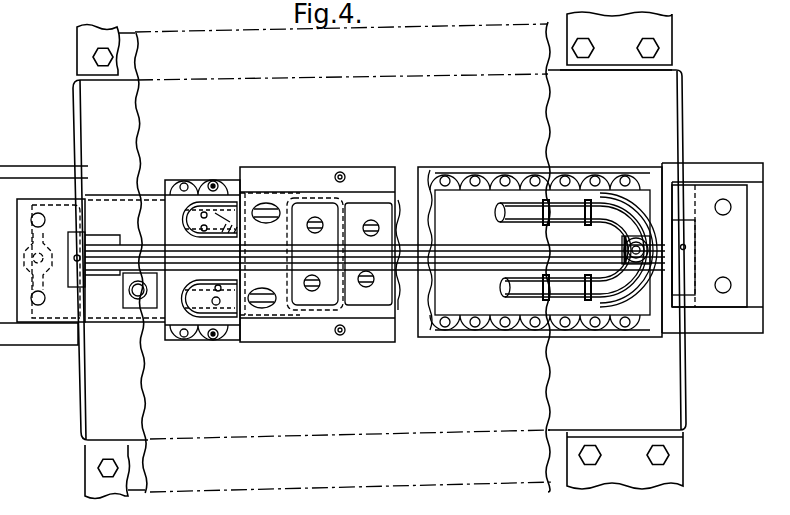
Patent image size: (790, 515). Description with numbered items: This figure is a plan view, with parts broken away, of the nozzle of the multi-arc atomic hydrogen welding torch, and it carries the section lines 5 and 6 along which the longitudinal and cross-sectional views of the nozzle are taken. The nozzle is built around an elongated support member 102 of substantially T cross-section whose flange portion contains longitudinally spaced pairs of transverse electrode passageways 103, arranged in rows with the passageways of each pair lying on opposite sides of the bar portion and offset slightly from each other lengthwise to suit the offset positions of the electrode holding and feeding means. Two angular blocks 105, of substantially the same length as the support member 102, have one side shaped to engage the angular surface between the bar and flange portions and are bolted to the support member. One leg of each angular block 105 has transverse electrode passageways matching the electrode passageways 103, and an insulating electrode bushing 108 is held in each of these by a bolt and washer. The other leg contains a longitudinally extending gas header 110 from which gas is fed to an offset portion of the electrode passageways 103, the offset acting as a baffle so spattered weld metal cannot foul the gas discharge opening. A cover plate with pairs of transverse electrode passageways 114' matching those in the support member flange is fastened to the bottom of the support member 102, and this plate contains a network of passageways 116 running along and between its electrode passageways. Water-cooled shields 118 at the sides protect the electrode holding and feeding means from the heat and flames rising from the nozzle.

The support member 102 is at (473, 250).
The transverse electrode passageways 103 is at (263, 309).
The angular blocks 105 is at (455, 205).
The insulating electrode bushing 108 is at (225, 195).
The gas header 110 is at (243, 195).
The transverse electrode passageways of cover plate 114' is at (343, 225).
The network of passageways 116 is at (355, 200).
The water-cooled shields 118 is at (665, 52).
The section line 5- 5 is at (764, 245).
The section line 6- 6 is at (337, 506).